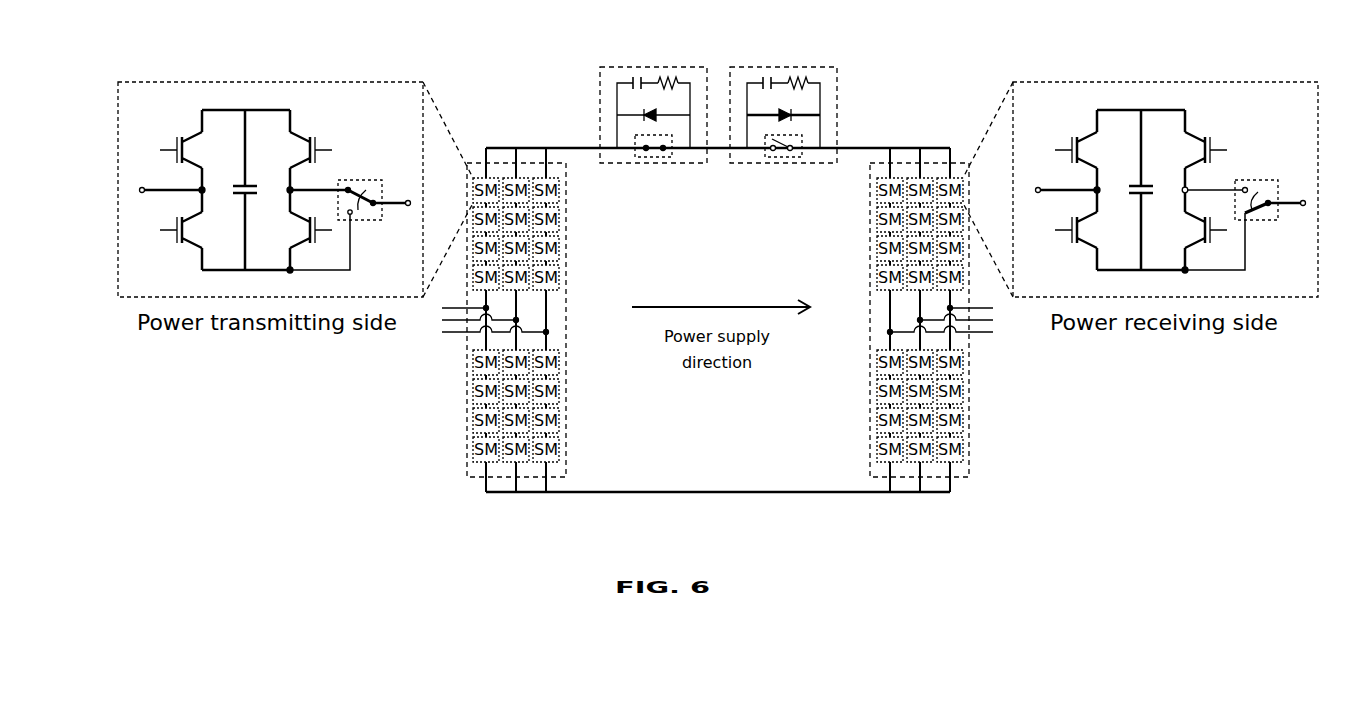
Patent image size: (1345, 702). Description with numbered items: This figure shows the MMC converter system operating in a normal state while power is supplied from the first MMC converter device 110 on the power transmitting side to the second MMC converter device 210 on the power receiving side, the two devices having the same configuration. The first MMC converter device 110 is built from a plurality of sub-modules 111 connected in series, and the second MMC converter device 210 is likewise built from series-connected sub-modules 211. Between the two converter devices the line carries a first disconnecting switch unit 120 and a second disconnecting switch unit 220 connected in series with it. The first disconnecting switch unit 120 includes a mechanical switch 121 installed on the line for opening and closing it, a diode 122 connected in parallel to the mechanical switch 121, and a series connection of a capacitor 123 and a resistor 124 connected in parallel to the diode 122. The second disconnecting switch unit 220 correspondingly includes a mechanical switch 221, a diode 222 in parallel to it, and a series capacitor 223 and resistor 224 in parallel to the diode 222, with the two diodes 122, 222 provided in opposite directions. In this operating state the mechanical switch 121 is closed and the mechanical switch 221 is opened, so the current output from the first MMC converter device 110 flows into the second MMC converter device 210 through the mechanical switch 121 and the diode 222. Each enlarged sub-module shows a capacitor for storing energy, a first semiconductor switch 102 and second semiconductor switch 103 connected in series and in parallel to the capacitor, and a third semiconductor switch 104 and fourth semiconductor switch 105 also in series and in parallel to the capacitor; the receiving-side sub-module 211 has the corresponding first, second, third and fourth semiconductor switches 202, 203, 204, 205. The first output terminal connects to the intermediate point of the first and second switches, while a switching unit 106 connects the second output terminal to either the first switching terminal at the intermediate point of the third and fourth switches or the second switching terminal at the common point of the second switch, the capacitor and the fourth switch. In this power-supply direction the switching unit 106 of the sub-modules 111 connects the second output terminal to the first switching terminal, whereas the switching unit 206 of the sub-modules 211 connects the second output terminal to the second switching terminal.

The first MMC converter device 110 is at (467, 455).
The sub-module 111 is at (295, 212).
The first semiconductor switch 102 is at (169, 138).
The second semiconductor switch 103 is at (169, 246).
The third semiconductor switch 104 is at (322, 138).
The fourth semiconductor switch 105 is at (328, 244).
The switching unit 106 is at (370, 179).
The first disconnecting switch unit 120 is at (630, 116).
The mechanical switch 121 is at (655, 162).
The diode 122 is at (648, 112).
The capacitor 123 is at (630, 79).
The resistor 124 is at (677, 77).
The second MMC converter device 210 is at (970, 455).
The sub-module 211 is at (1141, 213).
The first semiconductor switch 202 is at (1066, 138).
The second semiconductor switch 203 is at (1066, 246).
The third semiconductor switch 204 is at (1217, 138).
The fourth semiconductor switch 205 is at (1223, 244).
The switching unit 206 is at (1265, 179).
The second disconnecting switch unit 220 is at (809, 116).
The mechanical switch 221 is at (783, 162).
The diode 222 is at (791, 112).
The capacitor 223 is at (760, 77).
The resistor 224 is at (805, 79).